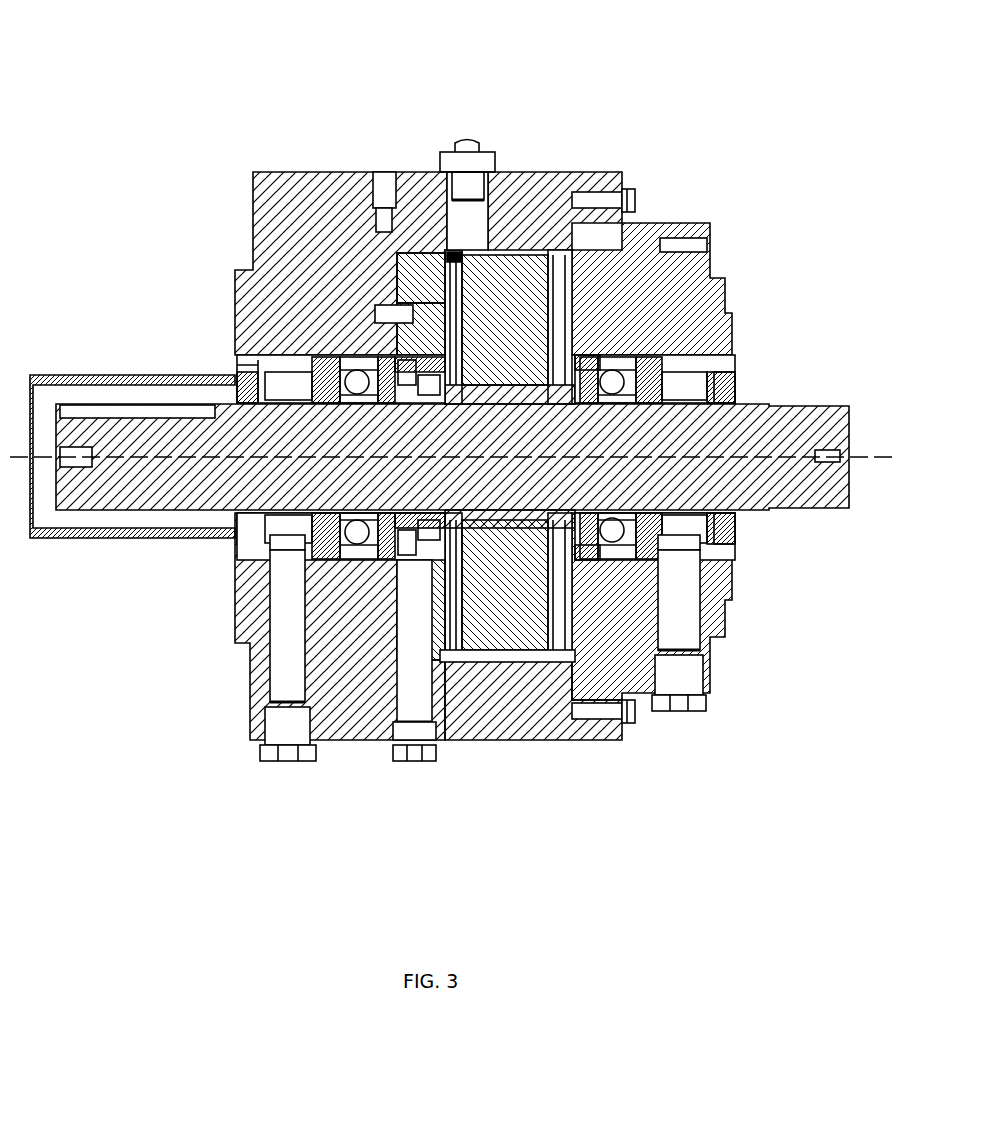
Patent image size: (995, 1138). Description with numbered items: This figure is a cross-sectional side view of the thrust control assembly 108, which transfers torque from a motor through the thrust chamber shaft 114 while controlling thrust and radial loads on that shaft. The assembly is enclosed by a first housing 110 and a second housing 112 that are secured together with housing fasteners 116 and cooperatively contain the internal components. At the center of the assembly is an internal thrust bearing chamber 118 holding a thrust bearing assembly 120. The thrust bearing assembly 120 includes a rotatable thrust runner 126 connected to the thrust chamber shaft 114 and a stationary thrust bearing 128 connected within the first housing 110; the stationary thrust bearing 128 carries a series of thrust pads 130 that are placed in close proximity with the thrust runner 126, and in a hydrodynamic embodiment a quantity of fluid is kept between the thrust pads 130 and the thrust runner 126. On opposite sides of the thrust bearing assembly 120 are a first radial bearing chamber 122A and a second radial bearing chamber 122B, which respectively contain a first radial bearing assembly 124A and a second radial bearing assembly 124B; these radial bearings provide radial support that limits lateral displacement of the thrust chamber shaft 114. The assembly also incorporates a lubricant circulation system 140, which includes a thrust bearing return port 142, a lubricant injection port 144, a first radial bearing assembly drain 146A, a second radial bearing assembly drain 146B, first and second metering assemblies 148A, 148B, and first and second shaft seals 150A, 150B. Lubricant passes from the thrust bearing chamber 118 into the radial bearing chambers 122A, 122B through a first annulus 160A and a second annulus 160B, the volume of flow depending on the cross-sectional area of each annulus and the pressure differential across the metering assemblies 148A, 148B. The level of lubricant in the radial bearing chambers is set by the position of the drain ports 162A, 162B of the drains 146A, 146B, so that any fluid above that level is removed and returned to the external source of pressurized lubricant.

The thrust control assembly 108 is at (573, 92).
The first housing 110 is at (272, 198).
The second housing 112 is at (695, 290).
The thrust chamber shaft 114 is at (68, 440).
The housing fasteners 116 is at (628, 200).
The thrust bearing chamber 118 is at (425, 282).
The thrust bearing assembly 120 is at (497, 658).
The first radial bearing chamber 122A is at (383, 355).
The second radial bearing chamber 122B is at (610, 362).
The first radial bearing assembly 124A is at (343, 563).
The second radial bearing assembly 124B is at (600, 562).
The thrust runner 126 is at (513, 300).
The stationary thrust bearing 128 is at (420, 347).
The thrust pads 130 is at (460, 265).
The lubricant circulation system 140 is at (473, 205).
The thrust bearing return port 142 is at (458, 175).
The lubricant injection port 144 is at (412, 735).
The first radial bearing assembly drain 146A is at (275, 735).
The second radial bearing assembly drain 146B is at (672, 680).
The first metering assembly 148A is at (420, 357).
The second metering assembly 148B is at (580, 362).
The first shaft seal 150A is at (300, 545).
The second shaft seal 150B is at (690, 528).
The first annulus 160A is at (395, 542).
The second annulus 160B is at (600, 565).
The first drain port 162A is at (248, 522).
The second drain port 162B is at (735, 527).